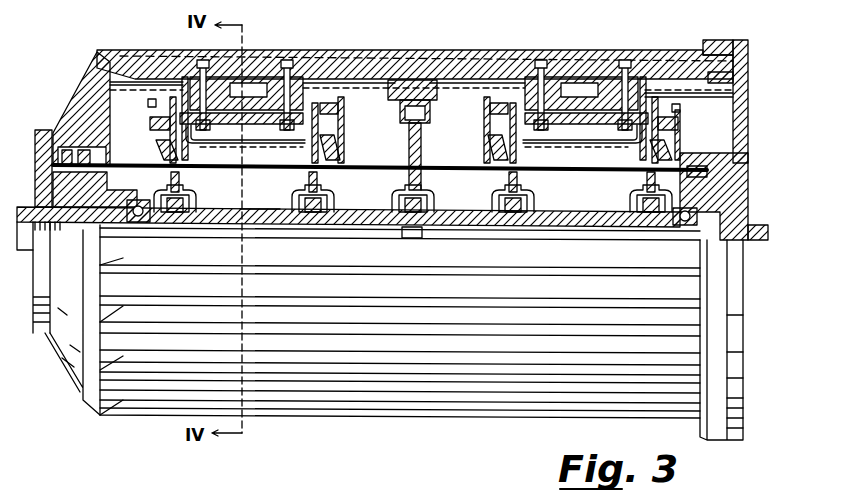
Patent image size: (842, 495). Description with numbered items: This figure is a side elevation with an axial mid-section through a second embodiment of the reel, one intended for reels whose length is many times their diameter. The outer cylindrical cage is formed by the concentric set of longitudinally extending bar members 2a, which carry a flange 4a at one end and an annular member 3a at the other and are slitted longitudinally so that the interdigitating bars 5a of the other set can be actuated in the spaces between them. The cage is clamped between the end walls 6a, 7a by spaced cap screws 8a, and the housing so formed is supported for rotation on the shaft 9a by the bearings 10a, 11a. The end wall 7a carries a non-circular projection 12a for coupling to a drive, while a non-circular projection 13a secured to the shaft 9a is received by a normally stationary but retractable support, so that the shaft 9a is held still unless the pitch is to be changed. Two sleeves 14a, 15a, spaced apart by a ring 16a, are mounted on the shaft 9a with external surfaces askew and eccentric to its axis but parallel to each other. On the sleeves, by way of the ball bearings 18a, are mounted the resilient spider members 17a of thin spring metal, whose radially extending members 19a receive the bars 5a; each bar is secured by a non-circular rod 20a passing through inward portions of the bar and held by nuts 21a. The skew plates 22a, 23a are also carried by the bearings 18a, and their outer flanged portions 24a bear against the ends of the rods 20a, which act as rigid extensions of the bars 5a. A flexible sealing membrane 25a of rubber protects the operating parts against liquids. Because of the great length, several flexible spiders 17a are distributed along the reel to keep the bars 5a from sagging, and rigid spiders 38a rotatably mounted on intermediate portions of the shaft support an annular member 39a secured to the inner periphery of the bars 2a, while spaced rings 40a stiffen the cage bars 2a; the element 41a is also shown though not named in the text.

The bar members 2a is at (118, 52).
The annular member 3a is at (83, 378).
The flange 4a is at (710, 42).
The bars 5a is at (160, 48).
The end wall 6a is at (85, 97).
The end wall 7a is at (748, 98).
The cap screws 8a is at (540, 172).
The shaft 9a is at (215, 230).
The bearing 10a is at (130, 215).
The bearing 11a is at (678, 228).
The projection 12a is at (762, 262).
The non-circular projection 13a is at (32, 208).
The sleeve 14a is at (170, 220).
The sleeve 15a is at (333, 220).
The ring 16a is at (258, 215).
The resilient spider member 17a is at (186, 143).
The ball bearings 18a is at (193, 192).
The radially extending members 19a is at (310, 100).
The non-circular rod 20a is at (258, 118).
The nuts 21a is at (148, 103).
The skew plate 22a is at (158, 152).
The skew plate 23a is at (338, 153).
The outer flanged portions 24a is at (150, 123).
The flexible sealing membrane 25a is at (247, 147).
The rigid spider 38a is at (422, 137).
The annular member 39a is at (403, 85).
The spaced rings 40a is at (247, 85).
The hub 41a is at (222, 100).